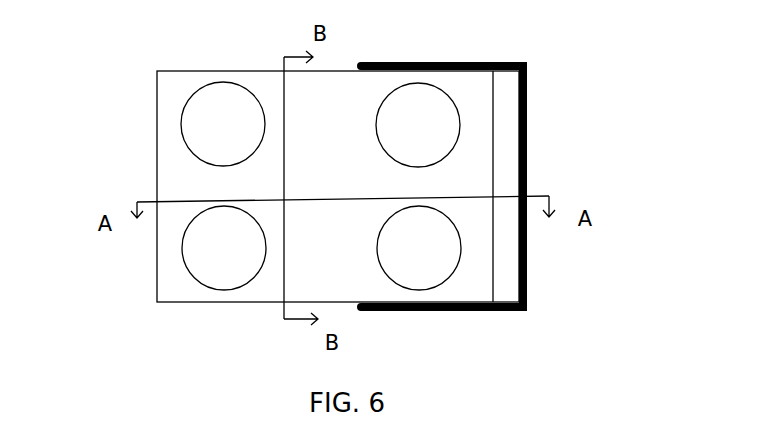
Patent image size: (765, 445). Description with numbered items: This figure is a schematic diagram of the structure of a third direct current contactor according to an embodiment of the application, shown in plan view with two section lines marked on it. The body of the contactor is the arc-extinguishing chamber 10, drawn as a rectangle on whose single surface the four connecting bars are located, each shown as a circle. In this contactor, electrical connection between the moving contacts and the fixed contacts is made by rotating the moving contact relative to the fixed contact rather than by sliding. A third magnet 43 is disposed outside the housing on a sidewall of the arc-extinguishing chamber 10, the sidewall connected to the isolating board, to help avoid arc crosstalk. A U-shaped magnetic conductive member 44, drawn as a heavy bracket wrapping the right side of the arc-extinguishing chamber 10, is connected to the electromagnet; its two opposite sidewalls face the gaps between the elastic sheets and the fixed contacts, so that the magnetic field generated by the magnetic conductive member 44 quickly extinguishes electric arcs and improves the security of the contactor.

The arc-extinguishing chamber 10 is at (168, 180).
The third magnet 43 is at (510, 174).
The U-shaped magnetic conductive member 44 is at (527, 293).